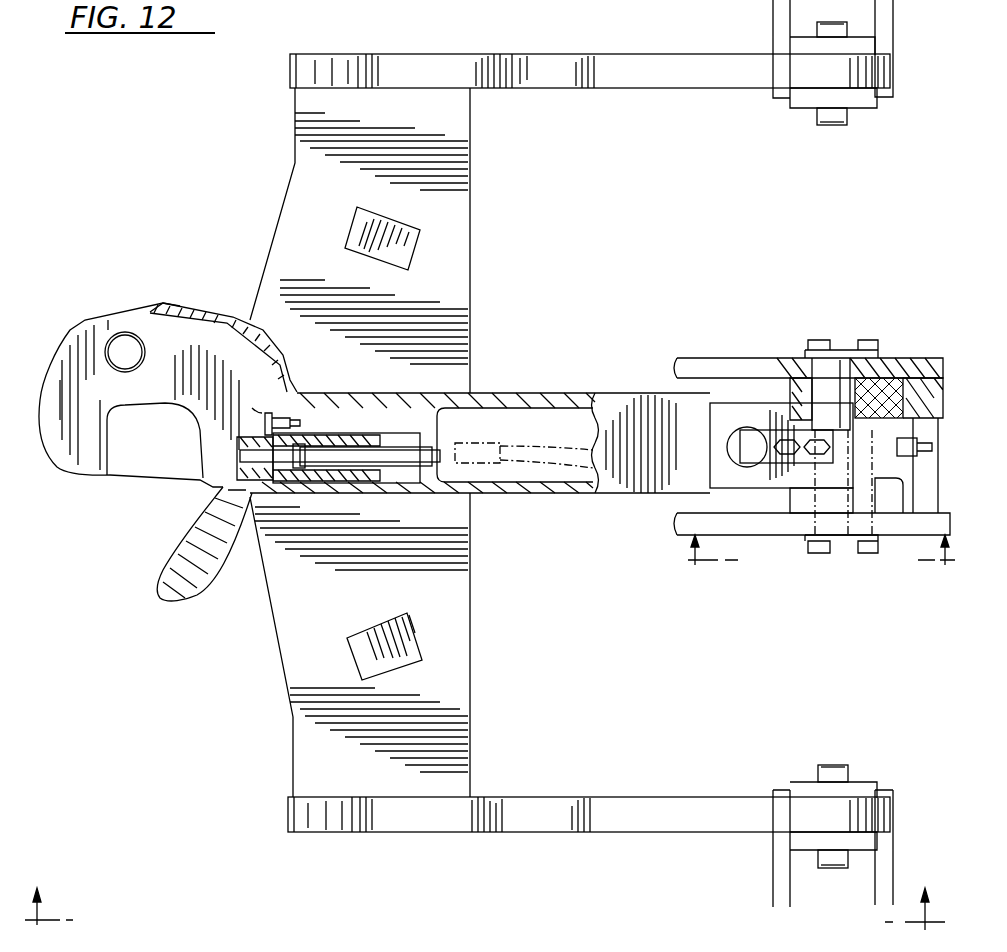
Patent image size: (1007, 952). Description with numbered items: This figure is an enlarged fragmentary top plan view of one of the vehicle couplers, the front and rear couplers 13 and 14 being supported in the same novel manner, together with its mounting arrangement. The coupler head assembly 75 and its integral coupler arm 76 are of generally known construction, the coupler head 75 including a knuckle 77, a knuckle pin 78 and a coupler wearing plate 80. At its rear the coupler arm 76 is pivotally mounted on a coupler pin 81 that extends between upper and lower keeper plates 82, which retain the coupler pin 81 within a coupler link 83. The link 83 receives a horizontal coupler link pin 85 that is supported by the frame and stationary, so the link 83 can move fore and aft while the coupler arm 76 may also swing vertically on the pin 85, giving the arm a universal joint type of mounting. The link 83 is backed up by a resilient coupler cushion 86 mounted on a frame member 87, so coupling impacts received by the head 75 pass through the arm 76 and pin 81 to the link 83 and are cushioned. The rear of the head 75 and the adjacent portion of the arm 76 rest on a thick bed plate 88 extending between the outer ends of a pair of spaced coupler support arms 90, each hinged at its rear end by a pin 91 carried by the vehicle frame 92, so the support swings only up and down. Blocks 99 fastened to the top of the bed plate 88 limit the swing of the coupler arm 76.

The front coupler 13 is at (218, 224).
The rear coupler 14 is at (805, 555).
The coupler head assembly 75 is at (192, 283).
The coupler arm 76 is at (532, 394).
The knuckle 77 is at (42, 395).
The knuckle pin 78 is at (118, 337).
The coupler wearing plate 80 is at (138, 480).
The coupler pin 81 is at (727, 447).
The keeper plates 82 is at (745, 463).
The coupler link 83 is at (720, 403).
The coupler link pin 85 is at (823, 373).
The coupler cushion 86 is at (885, 395).
The frame member 87 is at (935, 402).
The bed plate 88 is at (284, 667).
The coupler support arms 90 is at (665, 56).
The pin 91 is at (833, 128).
The vehicle frame 92 is at (766, 8).
The blocks 99 is at (348, 222).